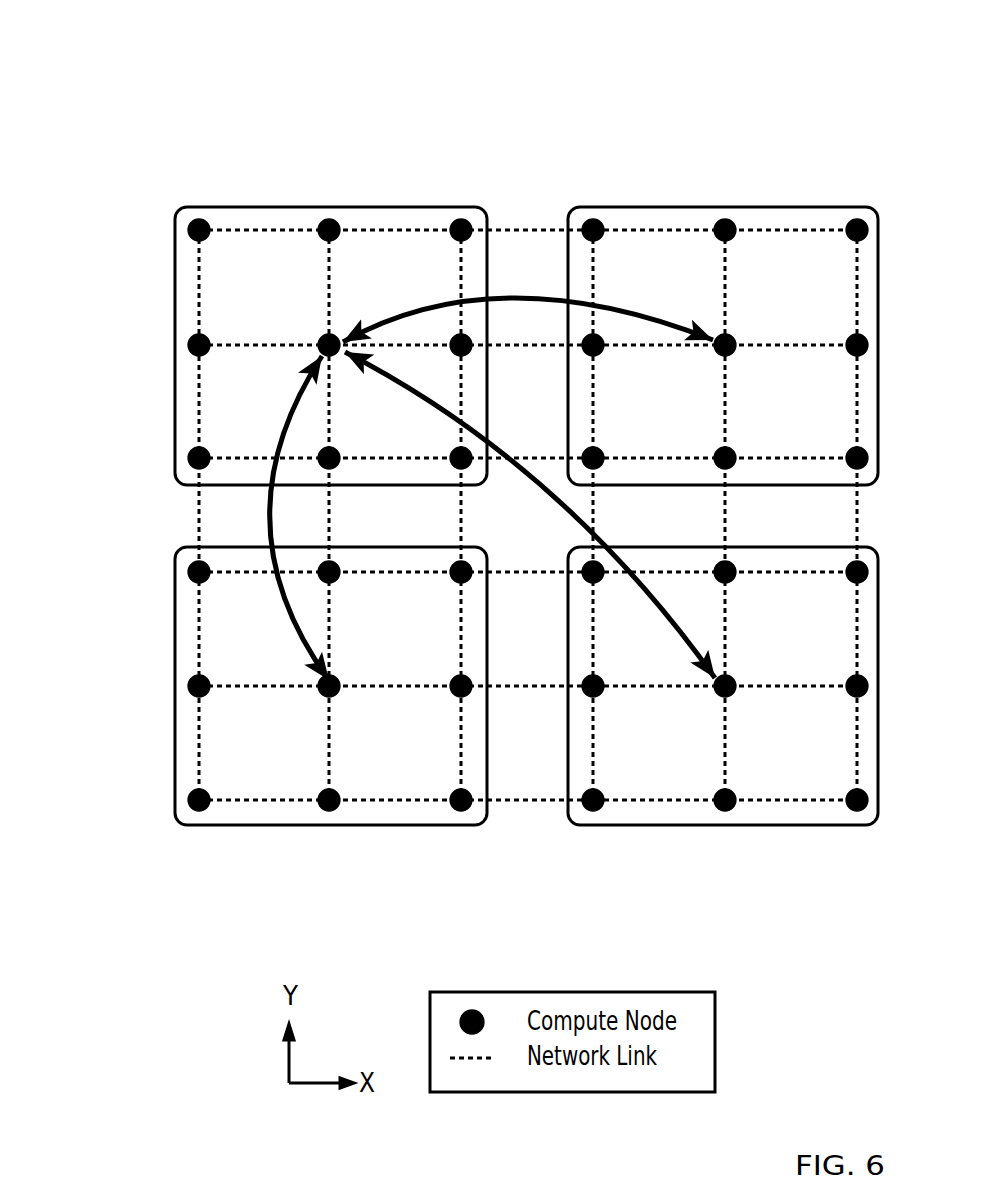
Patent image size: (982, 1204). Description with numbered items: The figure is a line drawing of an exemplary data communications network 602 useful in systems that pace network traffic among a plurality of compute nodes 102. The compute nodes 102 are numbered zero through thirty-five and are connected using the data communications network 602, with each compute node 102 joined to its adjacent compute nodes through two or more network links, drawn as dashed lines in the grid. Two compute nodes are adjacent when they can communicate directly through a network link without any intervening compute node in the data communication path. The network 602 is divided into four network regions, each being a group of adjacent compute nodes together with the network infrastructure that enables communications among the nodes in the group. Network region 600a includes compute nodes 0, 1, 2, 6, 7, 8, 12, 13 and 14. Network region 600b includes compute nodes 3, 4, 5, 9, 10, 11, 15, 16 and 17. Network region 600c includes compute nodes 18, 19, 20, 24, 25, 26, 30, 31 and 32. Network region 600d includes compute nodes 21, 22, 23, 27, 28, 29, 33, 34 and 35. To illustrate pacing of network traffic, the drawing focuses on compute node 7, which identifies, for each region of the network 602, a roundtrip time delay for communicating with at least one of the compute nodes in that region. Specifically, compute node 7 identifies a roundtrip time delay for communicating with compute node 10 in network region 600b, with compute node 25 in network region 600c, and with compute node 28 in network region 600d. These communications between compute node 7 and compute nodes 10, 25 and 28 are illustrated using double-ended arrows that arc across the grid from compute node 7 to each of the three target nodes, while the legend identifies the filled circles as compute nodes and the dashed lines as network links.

The data communications network 602 is at (490, 85).
The compute nodes 102 is at (600, 80).
The network region 600a is at (281, 207).
The network region 600b is at (845, 192).
The network region 600c is at (290, 825).
The network region 600d is at (763, 825).
The compute node 0 is at (205, 241).
The compute node 1 is at (335, 241).
The compute node 2 is at (455, 241).
The compute node 3 is at (599, 241).
The compute node 4 is at (731, 241).
The compute node 5 is at (851, 241).
The compute node 6 is at (205, 358).
The compute node 7 is at (335, 358).
The compute node 8 is at (455, 358).
The compute node 9 is at (599, 358).
The compute node 10 is at (736, 358).
The compute node 11 is at (846, 358).
The compute node 12 is at (210, 444).
The compute node 13 is at (340, 444).
The compute node 14 is at (450, 444).
The compute node 15 is at (604, 444).
The compute node 16 is at (736, 444).
The compute node 17 is at (846, 444).
The compute node 18 is at (210, 583).
The compute node 19 is at (340, 583).
The compute node 20 is at (450, 583).
The compute node 21 is at (604, 583).
The compute node 22 is at (736, 583).
The compute node 23 is at (846, 583).
The compute node 24 is at (210, 699).
The compute node 25 is at (340, 699).
The compute node 26 is at (450, 699).
The compute node 27 is at (604, 699).
The compute node 28 is at (736, 699).
The compute node 29 is at (846, 699).
The compute node 30 is at (210, 787).
The compute node 31 is at (340, 787).
The compute node 32 is at (450, 787).
The compute node 33 is at (604, 787).
The compute node 34 is at (736, 787).
The compute node 35 is at (846, 787).